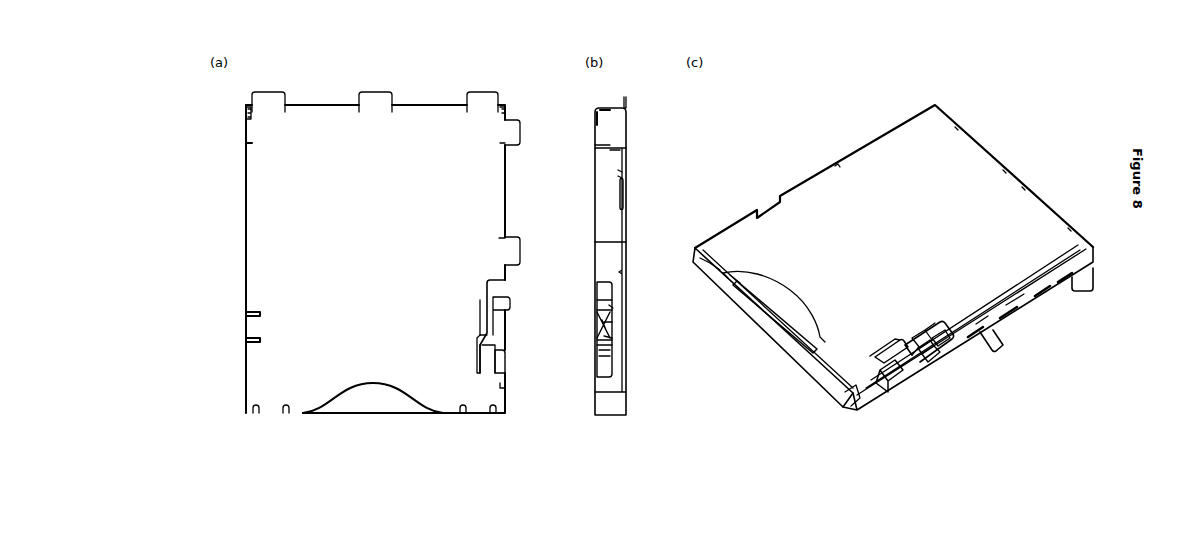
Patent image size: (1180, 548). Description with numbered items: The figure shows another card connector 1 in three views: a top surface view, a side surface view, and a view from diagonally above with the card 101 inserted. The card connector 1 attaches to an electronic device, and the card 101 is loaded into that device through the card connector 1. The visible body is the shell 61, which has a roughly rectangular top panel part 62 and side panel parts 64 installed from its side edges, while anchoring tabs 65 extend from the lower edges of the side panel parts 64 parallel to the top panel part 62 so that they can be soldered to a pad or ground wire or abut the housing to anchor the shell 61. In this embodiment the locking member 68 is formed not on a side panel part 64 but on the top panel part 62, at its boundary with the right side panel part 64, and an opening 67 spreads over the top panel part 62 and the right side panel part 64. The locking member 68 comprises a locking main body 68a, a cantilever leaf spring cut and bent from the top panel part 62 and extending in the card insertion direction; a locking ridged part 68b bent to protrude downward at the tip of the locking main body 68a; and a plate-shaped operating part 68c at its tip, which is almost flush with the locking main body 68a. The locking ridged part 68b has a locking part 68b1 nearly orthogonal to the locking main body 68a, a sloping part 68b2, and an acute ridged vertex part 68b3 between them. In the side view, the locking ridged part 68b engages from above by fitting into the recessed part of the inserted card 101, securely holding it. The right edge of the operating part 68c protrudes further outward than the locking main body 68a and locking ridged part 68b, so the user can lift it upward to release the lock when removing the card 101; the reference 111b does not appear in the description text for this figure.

The card connector 1 is at (515, 80).
The shell 61 is at (300, 413).
The top panel part 62 is at (428, 118).
The side panel part 64 is at (618, 172).
The anchoring tab 65 is at (375, 92).
The opening 67 is at (500, 278).
The locking member 68 is at (497, 350).
The locking main body 68a is at (497, 337).
The locking ridged part 68b is at (600, 315).
The locking part 68b1 is at (613, 308).
The sloping part 68b2 is at (614, 338).
The ridged vertex part 68b3 is at (614, 322).
The operating part 68c is at (510, 299).
The card 101 is at (733, 290).
The side wall 111b is at (807, 368).